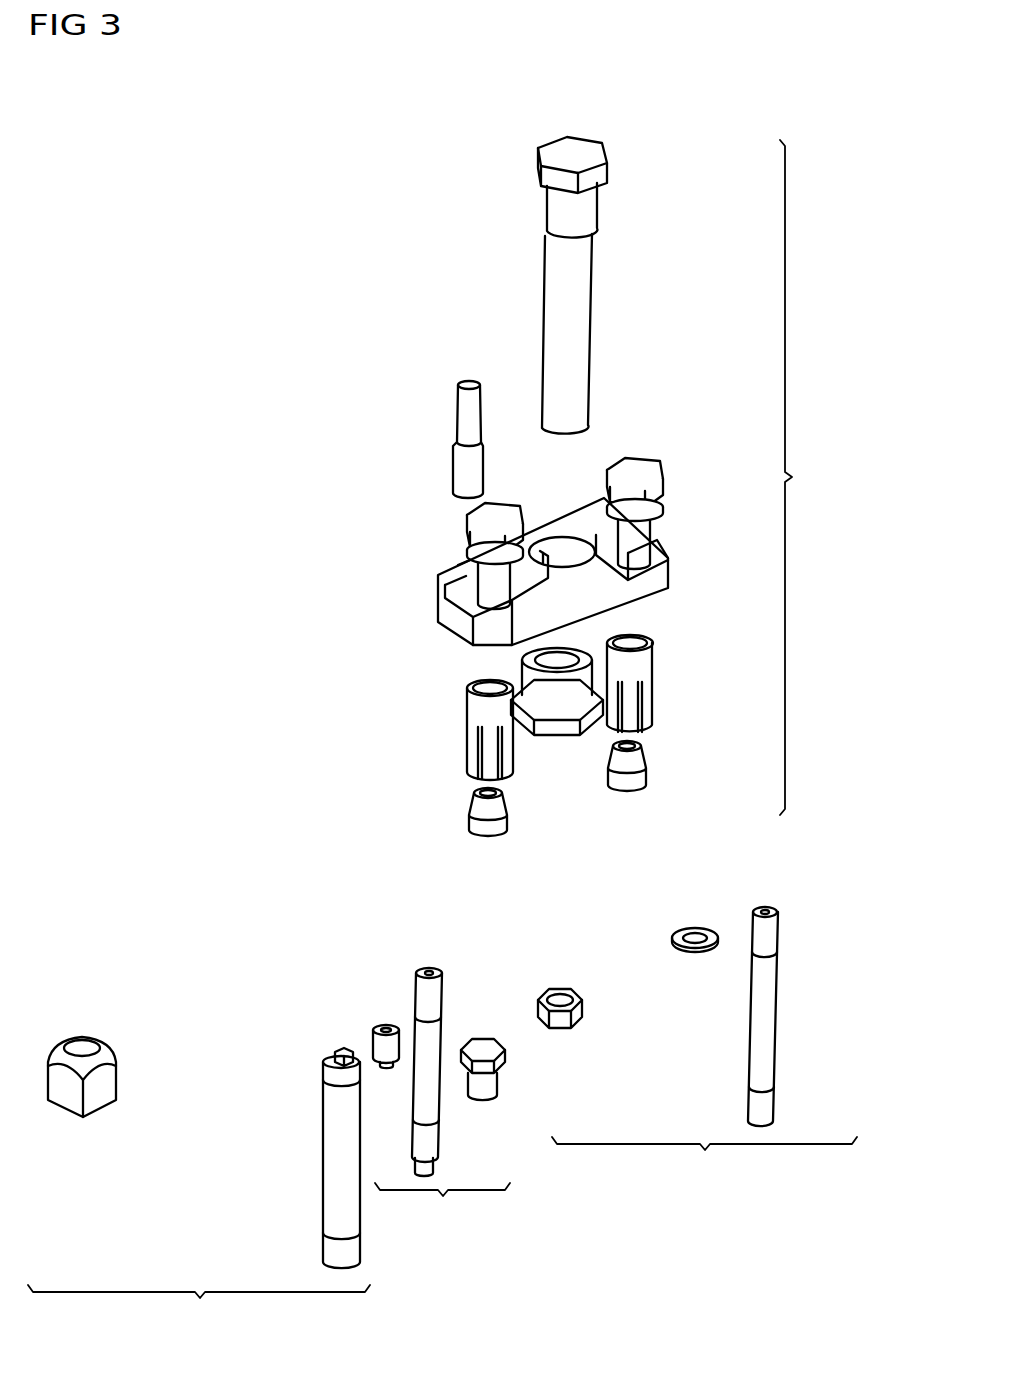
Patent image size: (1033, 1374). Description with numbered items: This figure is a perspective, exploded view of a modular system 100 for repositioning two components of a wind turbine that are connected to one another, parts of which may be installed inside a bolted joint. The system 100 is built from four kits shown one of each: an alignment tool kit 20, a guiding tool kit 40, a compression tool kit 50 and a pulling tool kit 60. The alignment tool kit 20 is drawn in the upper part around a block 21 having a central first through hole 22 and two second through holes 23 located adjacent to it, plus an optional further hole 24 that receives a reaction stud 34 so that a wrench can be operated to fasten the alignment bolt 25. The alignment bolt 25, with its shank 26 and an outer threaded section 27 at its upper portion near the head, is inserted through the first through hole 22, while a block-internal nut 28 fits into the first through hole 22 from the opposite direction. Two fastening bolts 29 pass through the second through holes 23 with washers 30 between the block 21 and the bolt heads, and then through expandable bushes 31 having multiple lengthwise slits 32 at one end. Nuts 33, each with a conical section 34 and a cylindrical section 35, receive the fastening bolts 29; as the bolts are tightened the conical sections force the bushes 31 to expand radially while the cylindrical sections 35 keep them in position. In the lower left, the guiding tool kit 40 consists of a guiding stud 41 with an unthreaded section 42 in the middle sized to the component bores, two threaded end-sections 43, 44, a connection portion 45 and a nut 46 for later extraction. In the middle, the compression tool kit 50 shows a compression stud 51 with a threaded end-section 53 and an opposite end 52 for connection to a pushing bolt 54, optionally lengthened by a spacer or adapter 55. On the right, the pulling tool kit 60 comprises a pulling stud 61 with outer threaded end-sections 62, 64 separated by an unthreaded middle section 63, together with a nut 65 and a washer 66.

The system 100 is at (800, 106).
The alignment tool kit 20 is at (802, 477).
The block 21 is at (673, 578).
The first through hole 22 is at (558, 550).
The second through hole 23 is at (463, 622).
The further hole 24 is at (468, 555).
The alignment bolt 25 is at (582, 148).
The screw shaft 26 is at (582, 320).
The outer threaded section 27 is at (587, 213).
The block-internal nut 28 is at (557, 720).
The fastening bolt 29 is at (498, 507).
The washer 30 is at (458, 570).
The expandable bush 31 is at (478, 712).
The slit 32 is at (480, 748).
The nut 33 is at (473, 833).
The reaction stud 34 is at (463, 407).
The cylindrical section 35 is at (500, 823).
The guiding tool kit 40 is at (199, 1310).
The guiding stud 41 is at (322, 1180).
The unthreaded section 42 is at (335, 1140).
The threaded end-section 43 is at (332, 1252).
The threaded end-section 44 is at (332, 1073).
The connection portion 45 is at (342, 1053).
The nut 46 is at (103, 1045).
The compression tool kit 50 is at (442, 1207).
The compression stud 51 is at (422, 972).
The rod head section 52 is at (433, 997).
The threaded end-section 53 is at (430, 1138).
The pushing bolt 54 is at (485, 1045).
The spacer or adapter 55 is at (380, 1033).
The pulling tool kit 60 is at (704, 1162).
The pulling stud 61 is at (783, 908).
The outer threaded end-section 62 is at (770, 937).
The unthreaded middle section 63 is at (767, 1015).
The outer threaded end-section 64 is at (763, 1107).
The nut 65 is at (568, 1032).
The washer 66 is at (713, 937).